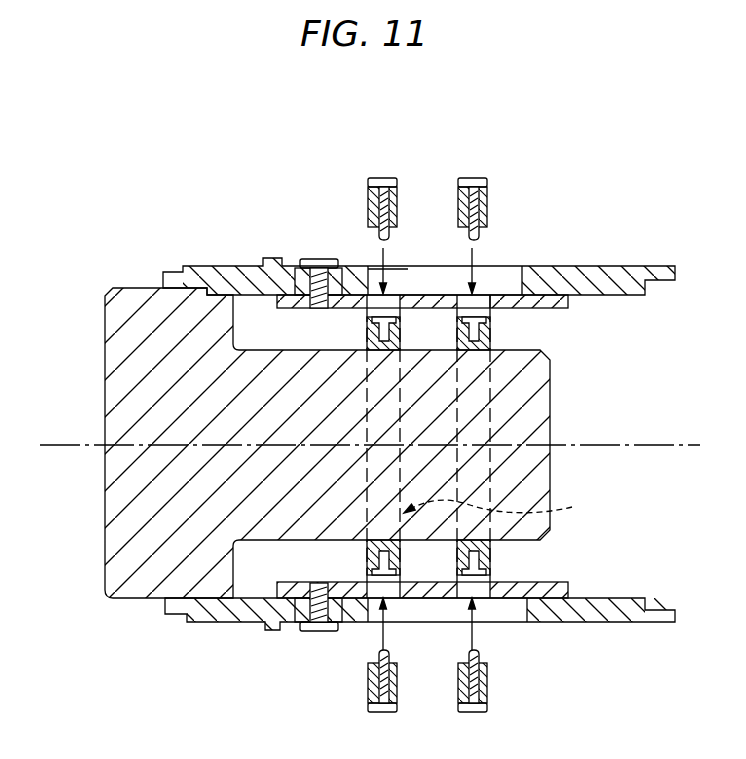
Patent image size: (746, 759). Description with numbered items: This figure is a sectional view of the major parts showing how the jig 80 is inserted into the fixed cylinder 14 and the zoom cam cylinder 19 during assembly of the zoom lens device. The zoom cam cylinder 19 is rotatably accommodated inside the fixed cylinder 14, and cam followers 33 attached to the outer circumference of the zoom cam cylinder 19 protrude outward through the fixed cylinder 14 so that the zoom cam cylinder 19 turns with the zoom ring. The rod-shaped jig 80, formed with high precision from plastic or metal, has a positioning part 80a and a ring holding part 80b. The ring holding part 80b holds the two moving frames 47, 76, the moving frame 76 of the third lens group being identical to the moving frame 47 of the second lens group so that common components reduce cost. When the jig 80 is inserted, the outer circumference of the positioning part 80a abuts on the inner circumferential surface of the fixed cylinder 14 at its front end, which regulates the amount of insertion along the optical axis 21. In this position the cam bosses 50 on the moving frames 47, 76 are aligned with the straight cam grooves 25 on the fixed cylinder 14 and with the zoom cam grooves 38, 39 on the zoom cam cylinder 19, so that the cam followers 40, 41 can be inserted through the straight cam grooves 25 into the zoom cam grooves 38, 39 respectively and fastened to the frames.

The fixed cylinder 14 is at (657, 261).
The zoom cam cylinder 19 is at (568, 302).
The optical axis 21 is at (693, 440).
The straight cam groove 25 is at (489, 283).
The cam follower 33 is at (316, 254).
The zoom cam groove 38 is at (365, 300).
The zoom cam groove 39 is at (488, 300).
The cam follower 40 is at (388, 170).
The cam follower 41 is at (477, 170).
The moving frame 47 is at (502, 511).
The cam boss 50 is at (401, 334).
The moving frame 76 is at (500, 547).
The jig 80 is at (320, 403).
The positioning part 80a is at (105, 381).
The ring holding part 80b is at (544, 405).